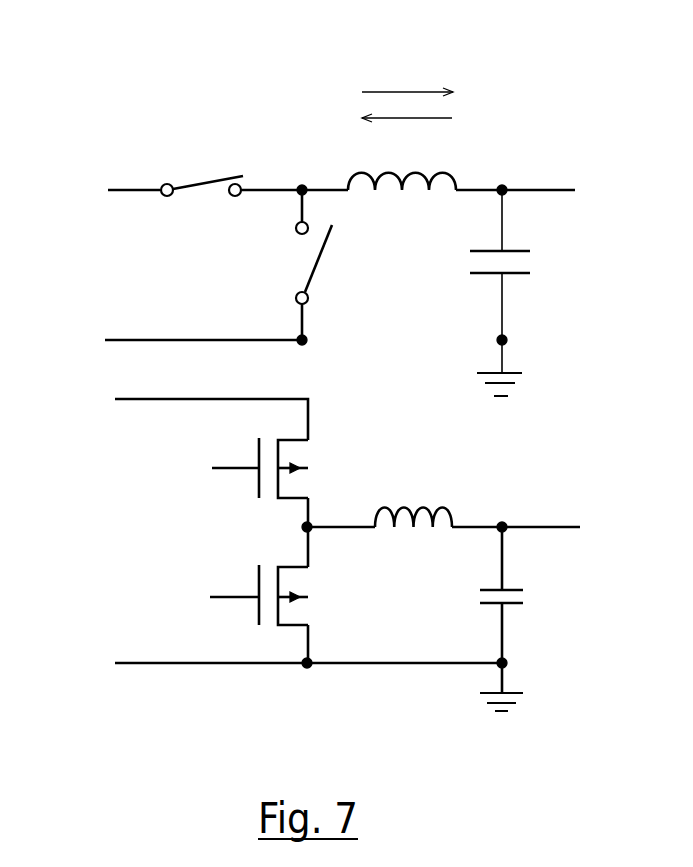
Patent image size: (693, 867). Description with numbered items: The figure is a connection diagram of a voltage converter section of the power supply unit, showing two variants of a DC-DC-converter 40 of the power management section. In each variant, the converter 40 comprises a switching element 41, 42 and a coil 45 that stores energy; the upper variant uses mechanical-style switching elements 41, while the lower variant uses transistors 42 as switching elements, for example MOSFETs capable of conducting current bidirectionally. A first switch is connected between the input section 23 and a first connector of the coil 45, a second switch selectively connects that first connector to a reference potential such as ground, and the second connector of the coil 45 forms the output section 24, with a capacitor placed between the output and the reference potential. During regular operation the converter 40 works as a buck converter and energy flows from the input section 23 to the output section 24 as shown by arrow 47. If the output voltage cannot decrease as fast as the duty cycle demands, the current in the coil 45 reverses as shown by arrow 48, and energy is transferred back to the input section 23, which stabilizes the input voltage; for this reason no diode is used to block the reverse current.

The input section 23 is at (111, 170).
The output section 24 is at (548, 178).
The DC-DC-converter 40 is at (600, 225).
The switching element 41 is at (233, 154).
The switching element 42 is at (327, 437).
The coil 45 is at (445, 170).
The arrow 47 is at (407, 69).
The arrow 48 is at (398, 120).